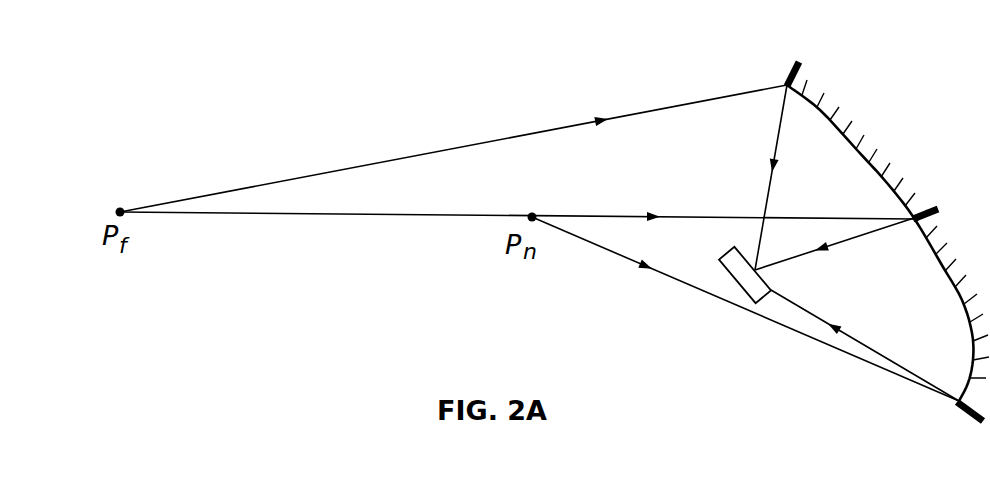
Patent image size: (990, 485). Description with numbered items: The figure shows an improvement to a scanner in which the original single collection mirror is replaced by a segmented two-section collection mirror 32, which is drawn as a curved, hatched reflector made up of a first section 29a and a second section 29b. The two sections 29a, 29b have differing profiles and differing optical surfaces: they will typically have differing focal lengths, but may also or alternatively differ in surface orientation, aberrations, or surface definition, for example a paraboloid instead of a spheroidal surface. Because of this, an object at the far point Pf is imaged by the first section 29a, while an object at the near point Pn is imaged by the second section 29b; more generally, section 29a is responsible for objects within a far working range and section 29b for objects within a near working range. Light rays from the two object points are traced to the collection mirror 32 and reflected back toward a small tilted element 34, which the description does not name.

The two-section collection mirror 32 is at (898, 101).
The first section 29a is at (857, 151).
The second section 29b is at (943, 267).
The detector 34 is at (737, 283).